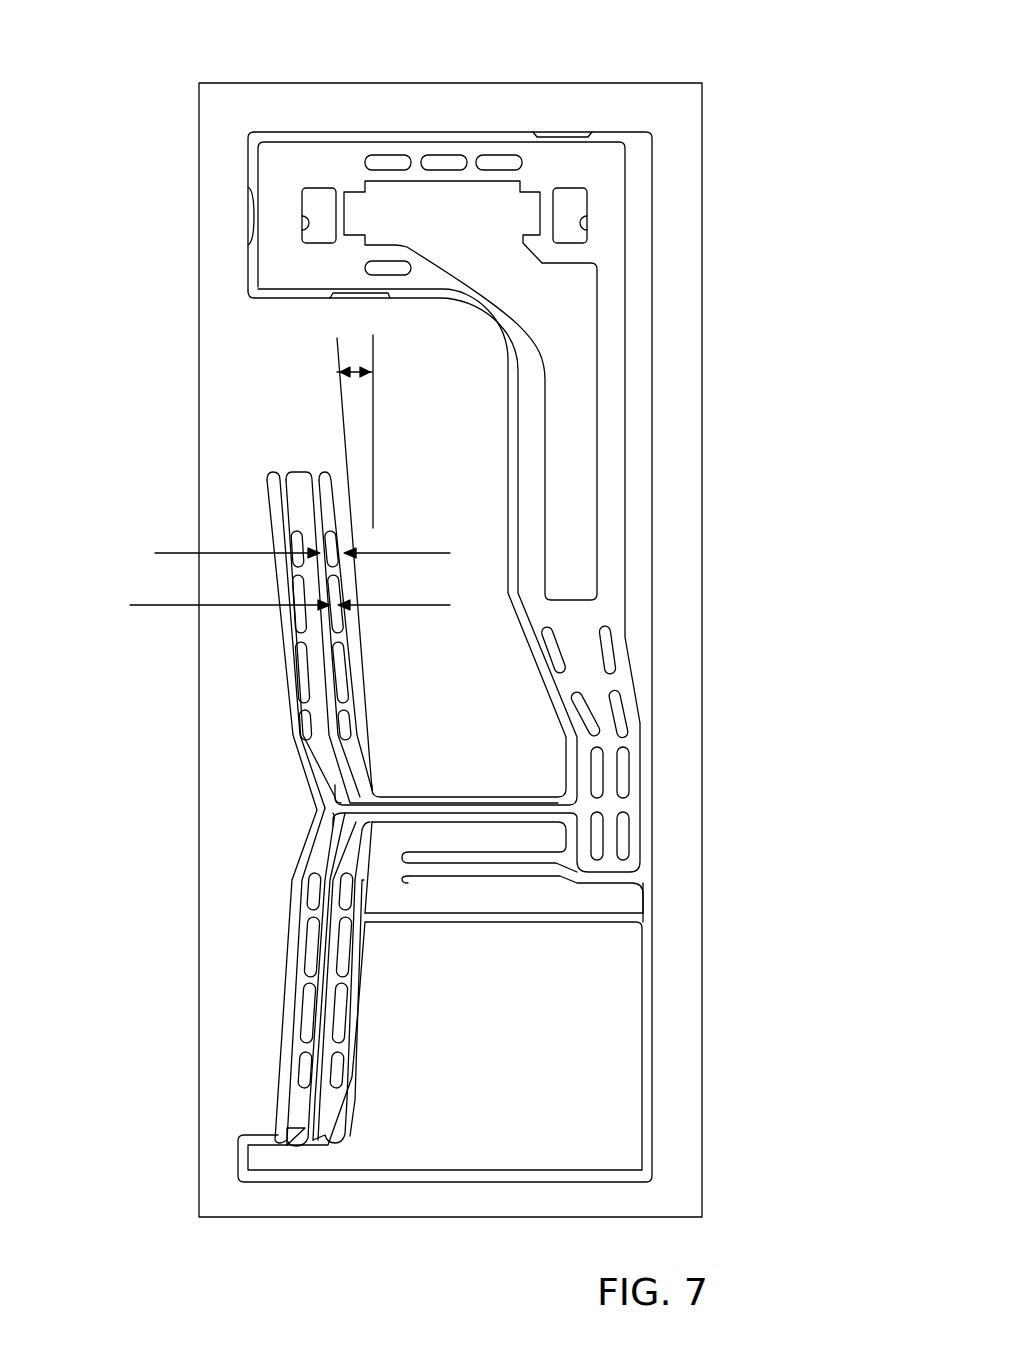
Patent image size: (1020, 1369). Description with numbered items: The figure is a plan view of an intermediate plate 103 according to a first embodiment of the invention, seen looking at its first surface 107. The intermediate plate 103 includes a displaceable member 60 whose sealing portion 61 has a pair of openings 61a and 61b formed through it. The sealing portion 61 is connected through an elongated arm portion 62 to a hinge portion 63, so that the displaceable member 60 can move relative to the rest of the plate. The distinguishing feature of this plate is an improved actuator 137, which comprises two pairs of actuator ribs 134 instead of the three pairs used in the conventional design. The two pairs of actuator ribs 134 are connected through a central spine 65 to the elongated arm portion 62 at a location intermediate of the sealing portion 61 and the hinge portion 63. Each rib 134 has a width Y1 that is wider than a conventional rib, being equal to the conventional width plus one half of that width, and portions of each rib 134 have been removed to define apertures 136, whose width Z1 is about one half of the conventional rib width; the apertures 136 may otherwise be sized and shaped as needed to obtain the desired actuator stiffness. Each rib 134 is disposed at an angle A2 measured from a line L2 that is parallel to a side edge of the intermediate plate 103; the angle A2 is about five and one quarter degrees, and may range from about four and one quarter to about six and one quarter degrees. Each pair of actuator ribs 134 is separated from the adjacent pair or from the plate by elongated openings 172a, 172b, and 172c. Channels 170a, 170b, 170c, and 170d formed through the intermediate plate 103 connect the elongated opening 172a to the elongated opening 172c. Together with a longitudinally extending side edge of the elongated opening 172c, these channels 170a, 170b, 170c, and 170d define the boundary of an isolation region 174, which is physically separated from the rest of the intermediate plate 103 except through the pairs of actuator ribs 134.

The intermediate plate 103 is at (248, 84).
The first surface 107 is at (276, 341).
The displaceable member 60 is at (636, 444).
The sealing portion 61 is at (612, 158).
The opening 61a is at (308, 232).
The opening 61b is at (585, 232).
The elongated arm portion 62 is at (637, 504).
The hinge portion 63 is at (487, 877).
The central spine 65 is at (472, 808).
The actuator ribs 134 is at (323, 478).
The apertures 136 is at (344, 672).
The improved actuator 137 is at (264, 813).
The channel 170a is at (612, 914).
The channel 170b is at (648, 1022).
The channel 170c is at (458, 1186).
The channel 170d is at (244, 1158).
The elongated opening 172a is at (292, 912).
The elongated opening 172b is at (300, 1002).
The elongated opening 172c is at (342, 1068).
The isolation region 174 is at (605, 1112).
The angle A2 is at (352, 370).
The line L2 is at (376, 452).
The width Y1 is at (157, 553).
The width Z1 is at (130, 605).